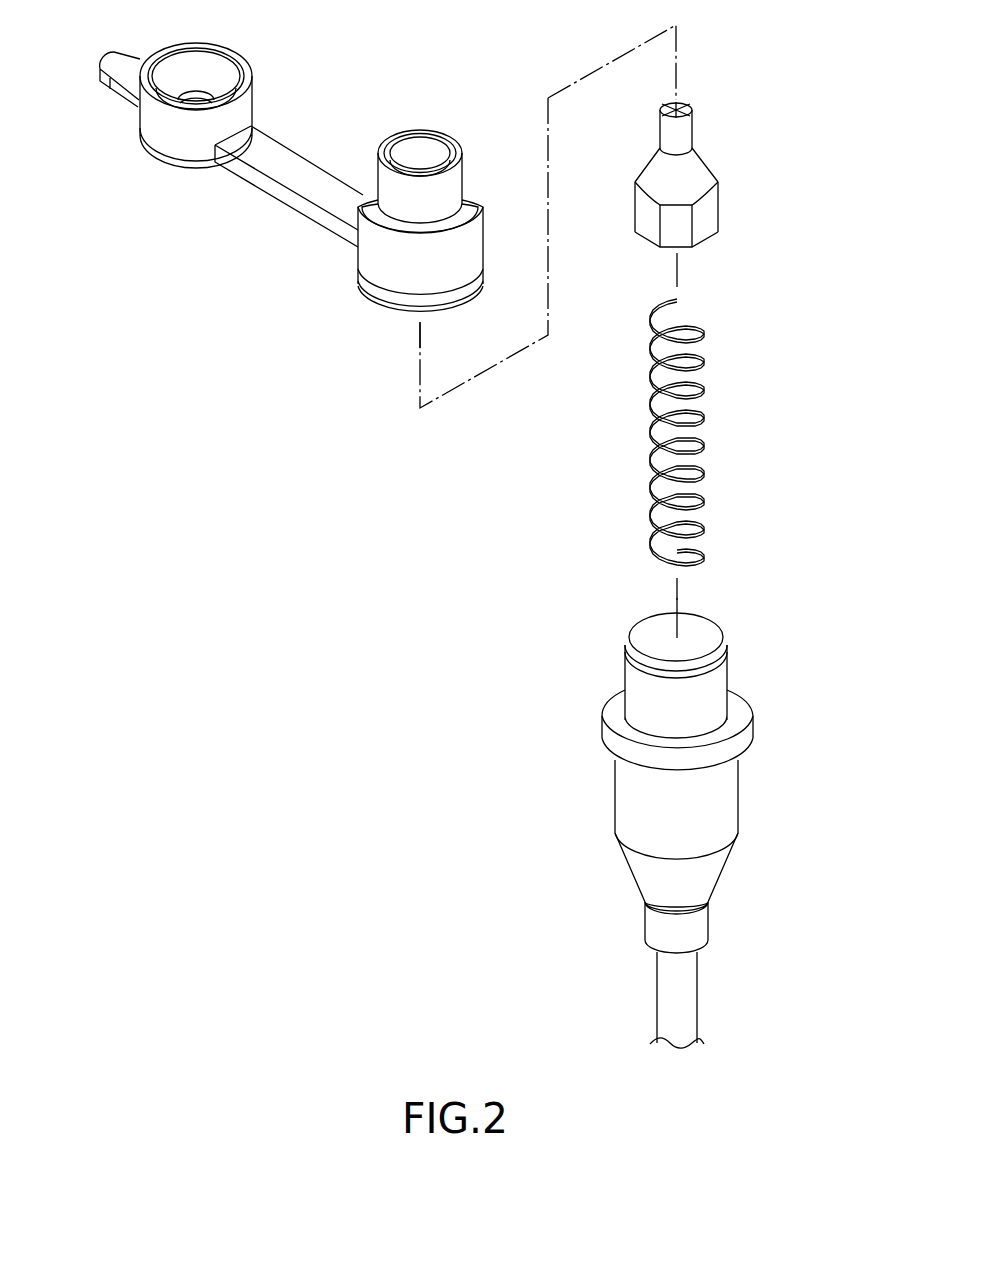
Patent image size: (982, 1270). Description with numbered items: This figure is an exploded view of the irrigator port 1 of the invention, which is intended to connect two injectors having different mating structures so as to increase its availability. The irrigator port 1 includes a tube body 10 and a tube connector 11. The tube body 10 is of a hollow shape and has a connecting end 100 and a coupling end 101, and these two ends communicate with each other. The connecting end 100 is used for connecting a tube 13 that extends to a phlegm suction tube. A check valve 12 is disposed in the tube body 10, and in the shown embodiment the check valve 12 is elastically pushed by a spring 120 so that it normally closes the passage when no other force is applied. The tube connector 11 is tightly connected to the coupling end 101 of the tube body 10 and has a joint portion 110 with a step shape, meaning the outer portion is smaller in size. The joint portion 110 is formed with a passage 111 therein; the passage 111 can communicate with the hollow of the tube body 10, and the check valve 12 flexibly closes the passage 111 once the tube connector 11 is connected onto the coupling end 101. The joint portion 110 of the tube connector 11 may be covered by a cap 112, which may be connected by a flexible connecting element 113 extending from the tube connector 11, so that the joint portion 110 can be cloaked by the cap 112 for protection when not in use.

The irrigator port 1 is at (460, 18).
The tube body 10 is at (674, 775).
The connecting end 100 is at (653, 925).
The coupling end 101 is at (628, 688).
The tube connector 11 is at (399, 215).
The joint portion 110 is at (382, 186).
The passage 111 is at (422, 157).
The cap 112 is at (150, 123).
The flexible connecting element 113 is at (305, 192).
The check valve 12 is at (700, 163).
The spring 120 is at (703, 443).
The tube 13 is at (690, 1000).